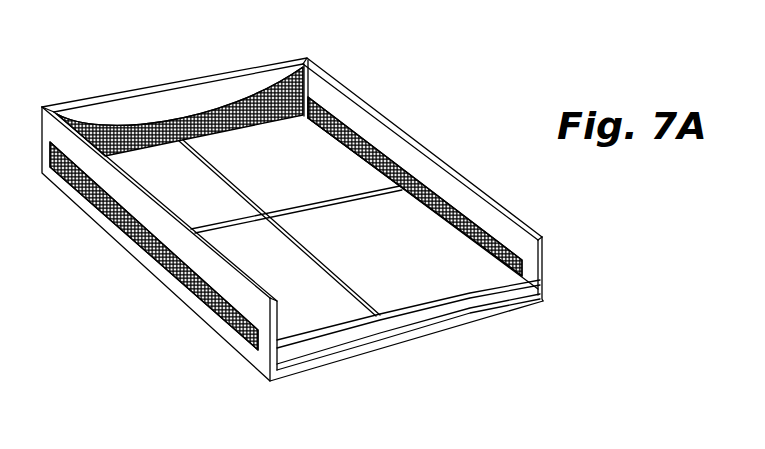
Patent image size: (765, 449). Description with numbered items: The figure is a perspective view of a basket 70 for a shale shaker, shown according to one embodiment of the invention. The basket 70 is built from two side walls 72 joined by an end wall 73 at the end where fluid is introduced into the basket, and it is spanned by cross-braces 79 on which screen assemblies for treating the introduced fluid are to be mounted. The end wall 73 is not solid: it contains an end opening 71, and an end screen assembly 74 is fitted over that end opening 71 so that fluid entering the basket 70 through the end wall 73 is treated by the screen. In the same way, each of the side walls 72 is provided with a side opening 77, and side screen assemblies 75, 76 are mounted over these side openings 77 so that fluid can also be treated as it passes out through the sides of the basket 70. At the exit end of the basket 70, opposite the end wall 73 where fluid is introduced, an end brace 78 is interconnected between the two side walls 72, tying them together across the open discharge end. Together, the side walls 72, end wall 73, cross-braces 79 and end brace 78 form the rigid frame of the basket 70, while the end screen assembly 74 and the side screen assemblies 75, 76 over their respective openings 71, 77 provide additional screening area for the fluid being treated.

The basket 70 is at (164, 295).
The end opening 71 is at (187, 118).
The side walls 72 is at (423, 170).
The end wall 73 is at (134, 110).
The end screen assembly 74 is at (254, 95).
The side screen assembly 75 is at (94, 191).
The side screen assembly 76 is at (465, 232).
The side openings 77 is at (353, 127).
The end brace 78 is at (330, 343).
The cross-braces 79 is at (323, 198).